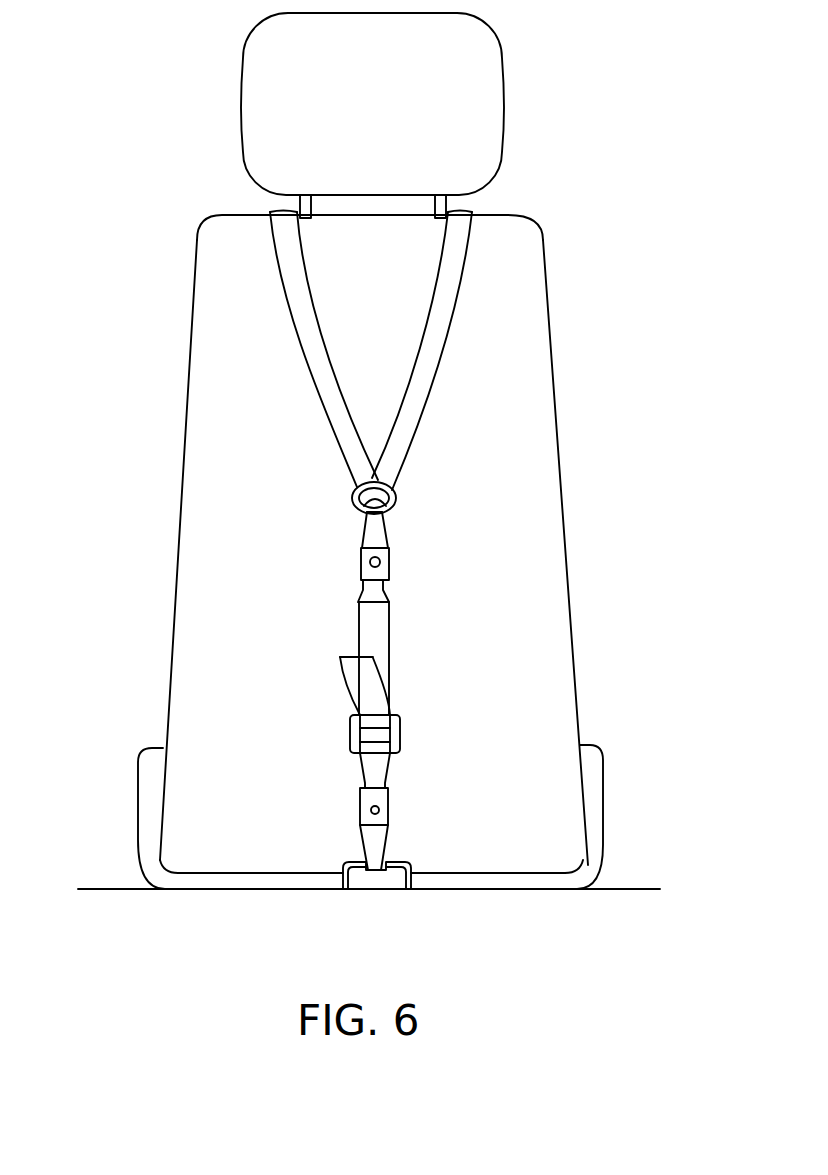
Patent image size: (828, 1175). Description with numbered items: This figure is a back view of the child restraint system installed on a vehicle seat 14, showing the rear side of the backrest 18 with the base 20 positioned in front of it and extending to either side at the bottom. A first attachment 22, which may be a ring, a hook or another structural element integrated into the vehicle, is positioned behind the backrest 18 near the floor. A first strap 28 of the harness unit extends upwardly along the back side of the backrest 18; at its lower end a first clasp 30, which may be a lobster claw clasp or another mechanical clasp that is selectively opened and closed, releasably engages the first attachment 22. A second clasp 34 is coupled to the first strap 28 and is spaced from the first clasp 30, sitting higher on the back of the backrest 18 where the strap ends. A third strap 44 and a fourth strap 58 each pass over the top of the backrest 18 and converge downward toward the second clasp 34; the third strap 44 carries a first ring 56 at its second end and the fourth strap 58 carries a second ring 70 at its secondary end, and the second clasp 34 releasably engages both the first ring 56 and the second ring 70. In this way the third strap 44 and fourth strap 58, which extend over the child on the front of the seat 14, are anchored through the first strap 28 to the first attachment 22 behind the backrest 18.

The seat 14 is at (553, 225).
The backrest 18 is at (207, 585).
The base 20 is at (150, 745).
The first attachment 22 is at (341, 863).
The first strap 28 is at (391, 646).
The first clasp 30 is at (389, 838).
The second clasp 34 is at (389, 550).
The third strap 44 is at (443, 352).
The first ring 56 is at (394, 506).
The fourth strap 58 is at (297, 337).
The second ring 70 is at (353, 495).